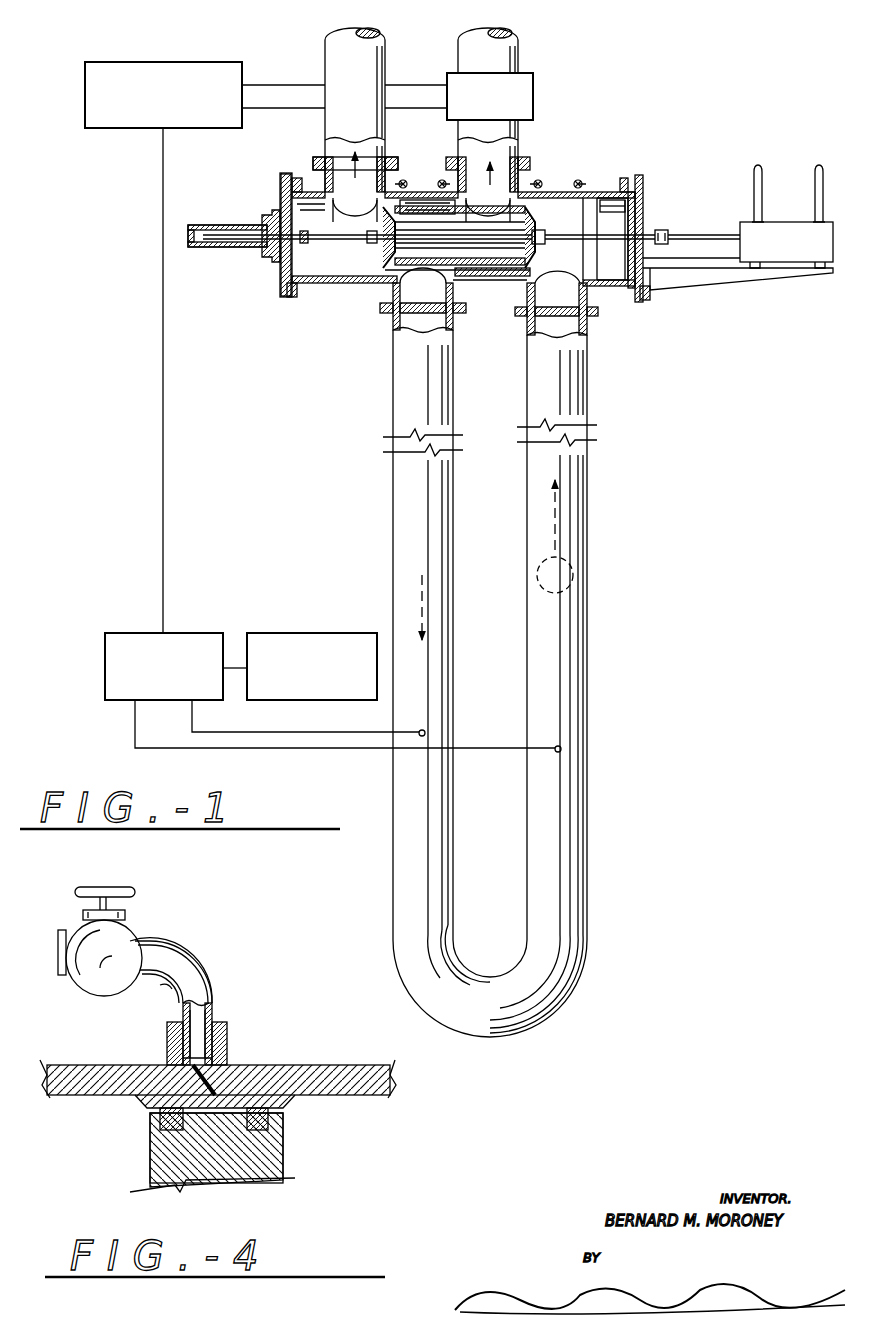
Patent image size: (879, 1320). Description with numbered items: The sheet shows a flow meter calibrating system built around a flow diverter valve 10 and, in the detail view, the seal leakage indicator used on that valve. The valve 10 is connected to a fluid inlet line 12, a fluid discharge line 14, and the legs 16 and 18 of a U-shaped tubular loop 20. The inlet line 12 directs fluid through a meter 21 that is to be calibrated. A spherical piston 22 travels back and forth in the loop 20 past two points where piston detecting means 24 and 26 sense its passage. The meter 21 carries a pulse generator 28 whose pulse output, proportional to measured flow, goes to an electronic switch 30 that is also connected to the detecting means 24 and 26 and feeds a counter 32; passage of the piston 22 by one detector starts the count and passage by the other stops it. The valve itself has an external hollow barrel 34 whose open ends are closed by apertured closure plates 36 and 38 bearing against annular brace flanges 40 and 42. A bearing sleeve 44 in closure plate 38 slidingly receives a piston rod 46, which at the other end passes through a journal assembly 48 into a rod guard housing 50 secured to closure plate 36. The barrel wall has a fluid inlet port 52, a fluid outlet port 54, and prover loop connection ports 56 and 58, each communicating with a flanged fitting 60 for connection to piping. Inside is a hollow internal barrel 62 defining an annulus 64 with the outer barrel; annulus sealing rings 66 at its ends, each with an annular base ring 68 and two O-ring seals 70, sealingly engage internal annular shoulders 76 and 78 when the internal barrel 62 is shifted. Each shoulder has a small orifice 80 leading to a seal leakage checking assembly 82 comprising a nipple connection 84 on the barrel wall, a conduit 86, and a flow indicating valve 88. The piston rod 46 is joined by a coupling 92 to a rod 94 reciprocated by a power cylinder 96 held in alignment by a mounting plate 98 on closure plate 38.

In FIG. 1, the flow diverter valve 10 is at (568, 160).
In FIG. 1, the fluid inlet line 12 is at (505, 57).
In FIG. 1, the fluid discharge line 14 is at (372, 78).
In FIG. 1, the leg of U-shaped tubular loop 16 is at (568, 378).
In FIG. 1, the leg of U-shaped tubular loop 18 is at (397, 374).
In FIG. 1, the U-shaped tubular loop 20 is at (592, 662).
In FIG. 1, the meter 21 is at (533, 84).
In FIG. 1, the spherical piston 22 is at (565, 575).
In FIG. 1, the piston detecting means 24 is at (561, 749).
In FIG. 1, the piston detecting means 26 is at (426, 733).
In FIG. 1, the pulse generator 28 is at (134, 128).
In FIG. 1, the electronic switch 30 is at (116, 700).
In FIG. 1, the counter 32 is at (312, 700).
In FIG. 1, the external hollow barrel 34 is at (322, 285).
In FIG. 4, the external hollow barrel 34 is at (330, 1072).
In FIG. 1, the closure plate 36 is at (279, 188).
In FIG. 1, the closure plate 38 is at (644, 190).
In FIG. 1, the annular brace flange 40 is at (296, 176).
In FIG. 1, the annular brace flange 42 is at (634, 178).
In FIG. 1, the bearing sleeve 44 is at (628, 250).
In FIG. 1, the piston rod 46 is at (628, 215).
In FIG. 1, the journal assembly 48 is at (306, 250).
In FIG. 1, the rod guard housing 50 is at (207, 247).
In FIG. 1, the fluid inlet port 52 is at (497, 192).
In FIG. 1, the fluid outlet port 54 is at (347, 206).
In FIG. 1, the prover loop connection port 56 is at (446, 284).
In FIG. 1, the prover loop connection port 58 is at (558, 287).
In FIG. 1, the flanged fitting 60 is at (318, 162).
In FIG. 1, the internal barrel 62 is at (432, 268).
In FIG. 1, the annulus 64 is at (480, 268).
In FIG. 1, the annulus sealing ring 66 is at (373, 278).
In FIG. 4, the annulus sealing ring 66 is at (285, 1150).
In FIG. 4, the annular base ring 68 is at (168, 1160).
In FIG. 4, the O-ring seal 70 is at (160, 1124).
In FIG. 1, the internal annular shoulder 76 is at (478, 292).
In FIG. 1, the internal annular shoulder 78 is at (582, 258).
In FIG. 4, the orifice 80 is at (227, 1067).
In FIG. 1, the seal leakage checking assembly 82 is at (440, 180).
In FIG. 4, the seal leakage checking assembly 82 is at (178, 936).
In FIG. 1, the nipple connection 84 is at (383, 250).
In FIG. 4, the nipple connection 84 is at (227, 1030).
In FIG. 4, the conduit 86 is at (210, 962).
In FIG. 4, the flow indicating valve 88 is at (125, 915).
In FIG. 1, the coupling 92 is at (666, 230).
In FIG. 1, the rod 94 is at (703, 232).
In FIG. 1, the power cylinder 96 is at (790, 243).
In FIG. 1, the mounting plate 98 is at (686, 285).